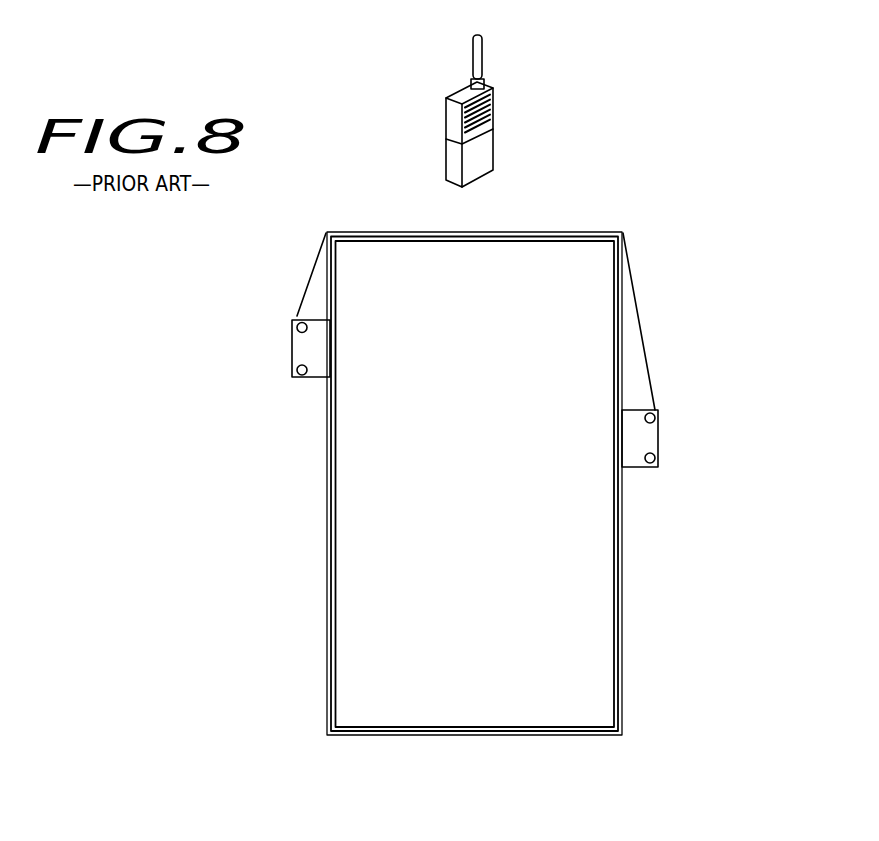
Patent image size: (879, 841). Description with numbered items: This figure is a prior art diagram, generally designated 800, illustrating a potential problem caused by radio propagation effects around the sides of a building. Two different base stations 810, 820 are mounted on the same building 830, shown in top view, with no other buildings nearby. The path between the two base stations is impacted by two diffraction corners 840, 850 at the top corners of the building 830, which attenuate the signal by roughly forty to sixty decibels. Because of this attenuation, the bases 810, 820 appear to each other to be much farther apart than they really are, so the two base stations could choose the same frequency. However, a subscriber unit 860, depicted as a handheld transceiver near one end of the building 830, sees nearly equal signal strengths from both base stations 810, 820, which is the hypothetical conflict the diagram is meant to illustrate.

The prior art diagram 800 is at (143, 274).
The base station 810 is at (292, 351).
The base station 820 is at (660, 429).
The building 830 is at (358, 473).
The diffraction corner 840 is at (321, 226).
The diffraction corner 850 is at (628, 226).
The subscriber unit 860 is at (485, 147).